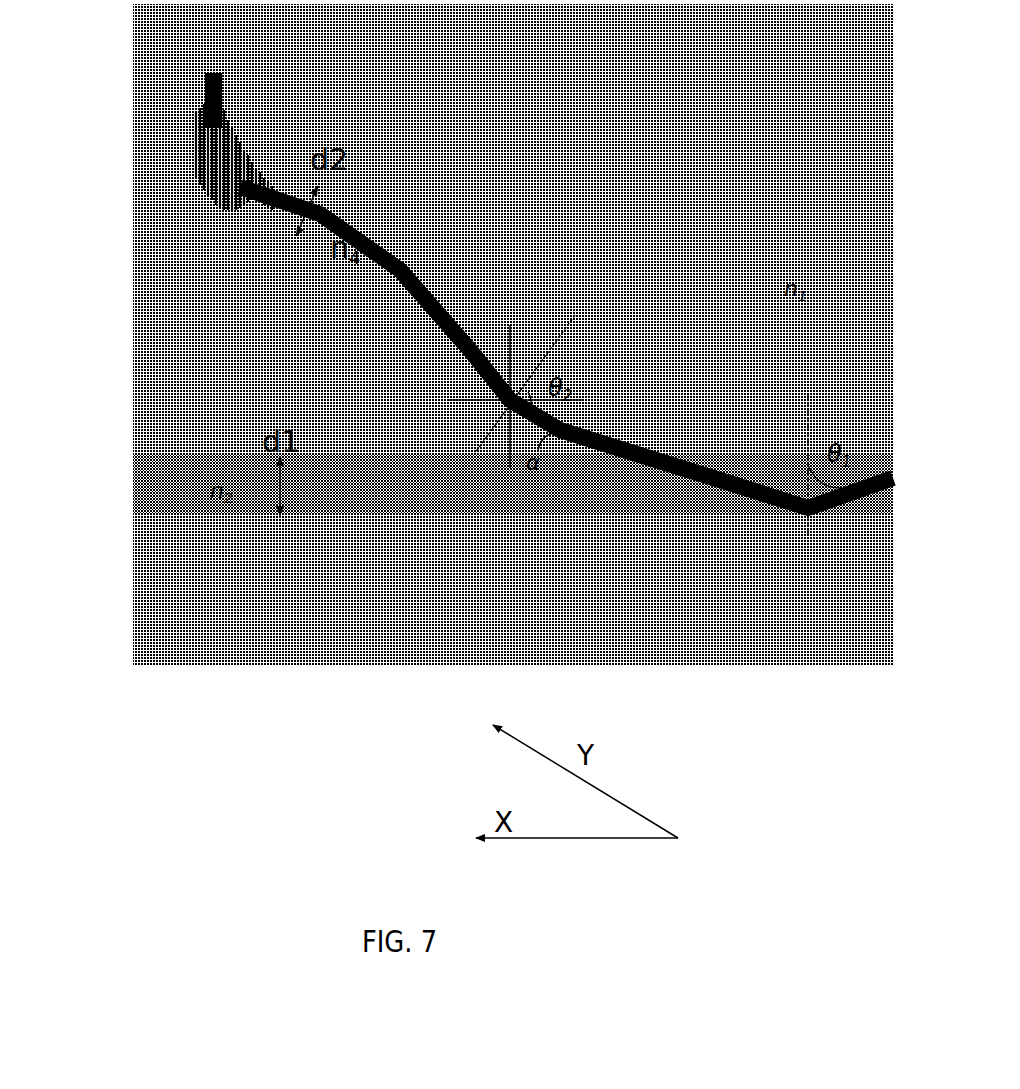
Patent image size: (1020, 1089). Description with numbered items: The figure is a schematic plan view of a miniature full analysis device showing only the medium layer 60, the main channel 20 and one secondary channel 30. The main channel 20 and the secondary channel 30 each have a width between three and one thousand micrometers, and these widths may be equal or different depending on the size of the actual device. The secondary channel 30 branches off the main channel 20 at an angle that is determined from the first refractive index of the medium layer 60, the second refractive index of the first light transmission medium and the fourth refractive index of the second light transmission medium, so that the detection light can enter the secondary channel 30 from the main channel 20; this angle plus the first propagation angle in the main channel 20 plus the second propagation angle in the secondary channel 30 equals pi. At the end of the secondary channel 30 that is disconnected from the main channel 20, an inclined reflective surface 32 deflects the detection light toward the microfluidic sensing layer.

The main channel 20 is at (397, 490).
The secondary channel 30 is at (462, 305).
The reflective surface 32 is at (195, 126).
The medium layer 60 is at (513, 229).